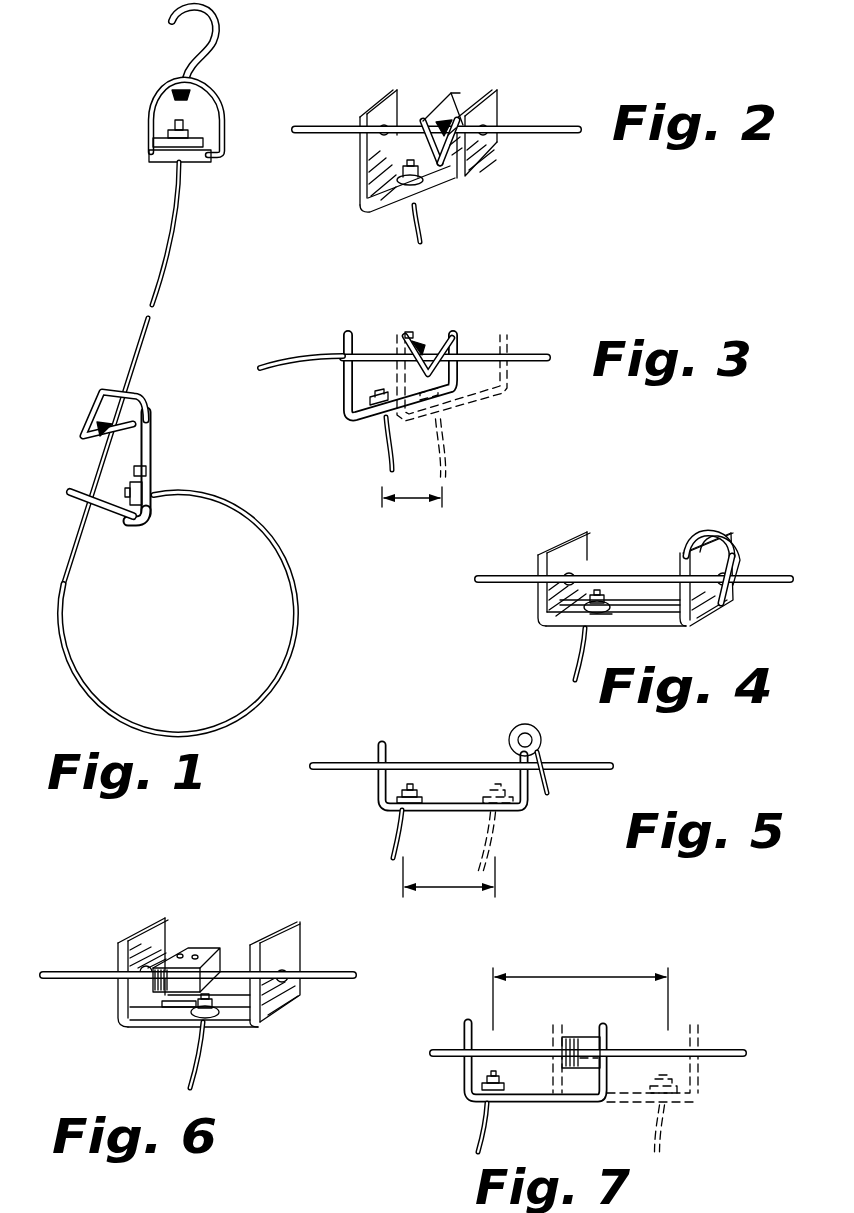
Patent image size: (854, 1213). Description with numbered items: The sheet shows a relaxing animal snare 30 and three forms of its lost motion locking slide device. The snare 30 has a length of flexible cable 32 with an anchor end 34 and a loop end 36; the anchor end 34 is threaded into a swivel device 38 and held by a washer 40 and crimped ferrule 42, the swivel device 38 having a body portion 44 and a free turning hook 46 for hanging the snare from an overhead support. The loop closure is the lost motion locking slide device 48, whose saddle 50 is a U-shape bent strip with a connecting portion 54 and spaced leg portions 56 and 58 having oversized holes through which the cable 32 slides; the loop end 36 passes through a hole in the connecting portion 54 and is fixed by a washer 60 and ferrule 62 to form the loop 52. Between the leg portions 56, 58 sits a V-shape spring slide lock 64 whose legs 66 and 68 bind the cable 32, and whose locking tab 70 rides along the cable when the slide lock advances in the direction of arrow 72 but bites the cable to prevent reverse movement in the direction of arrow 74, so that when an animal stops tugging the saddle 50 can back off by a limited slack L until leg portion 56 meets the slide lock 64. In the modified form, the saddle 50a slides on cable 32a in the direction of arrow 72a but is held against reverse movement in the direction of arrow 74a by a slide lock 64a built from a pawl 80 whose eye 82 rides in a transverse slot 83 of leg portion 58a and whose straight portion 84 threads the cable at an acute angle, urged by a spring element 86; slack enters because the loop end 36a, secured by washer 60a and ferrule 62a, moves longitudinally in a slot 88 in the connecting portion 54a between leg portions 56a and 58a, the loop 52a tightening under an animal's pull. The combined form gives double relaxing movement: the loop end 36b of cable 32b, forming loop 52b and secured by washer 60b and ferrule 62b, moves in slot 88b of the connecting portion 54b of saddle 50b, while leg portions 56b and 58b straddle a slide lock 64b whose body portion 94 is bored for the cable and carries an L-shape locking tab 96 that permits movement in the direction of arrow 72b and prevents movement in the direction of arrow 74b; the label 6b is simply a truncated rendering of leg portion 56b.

In FIG. 1, the relaxing snare 30 is at (86, 303).
In FIG. 1, the flexible cable 32 is at (166, 245).
In FIG. 2, the flexible cable 32 is at (315, 124).
In FIG. 3, the flexible cable 32 is at (532, 365).
In FIG. 1, the anchor end 34 is at (175, 123).
In FIG. 1, the loop end 36 is at (124, 498).
In FIG. 2, the loop end 36 is at (427, 165).
In FIG. 3, the loop end 36 is at (367, 396).
In FIG. 1, the swivel device 38 is at (151, 81).
In FIG. 1, the washer 40 is at (160, 142).
In FIG. 1, the crimped sleeve or ferrule 42 is at (170, 131).
In FIG. 1, the body portion 44 is at (157, 163).
In FIG. 1, the free turning hook 46 is at (219, 26).
In FIG. 1, the lost motion locking slide device 48 is at (75, 511).
In FIG. 1, the slide or saddle 50 is at (128, 464).
In FIG. 2, the slide or saddle 50 is at (427, 148).
In FIG. 3, the slide or saddle 50 is at (396, 395).
In FIG. 1, the loop 52 is at (300, 648).
In FIG. 2, the loop 52 is at (410, 228).
In FIG. 3, the loop 52 is at (262, 348).
In FIG. 1, the connecting portion 54 is at (152, 450).
In FIG. 2, the connecting portion 54 is at (375, 189).
In FIG. 3, the connecting portion 54 is at (376, 426).
In FIG. 1, the leg portion 56 is at (68, 492).
In FIG. 2, the leg portion 56 is at (368, 107).
In FIG. 3, the leg portion 56 is at (343, 341).
In FIG. 1, the leg portion 58 is at (143, 410).
In FIG. 2, the leg portion 58 is at (508, 131).
In FIG. 3, the leg portion 58 is at (460, 343).
In FIG. 1, the washer 60 is at (147, 470).
In FIG. 1, the crimped sleeve or ferrule 62 is at (135, 517).
In FIG. 1, the slide lock 64 is at (96, 400).
In FIG. 2, the slide lock 64 is at (466, 136).
In FIG. 3, the slide lock 64 is at (423, 324).
In FIG. 2, the leg 66 is at (430, 116).
In FIG. 3, the leg 66 is at (403, 347).
In FIG. 2, the leg 68 is at (481, 87).
In FIG. 3, the leg 68 is at (448, 337).
In FIG. 2, the locking detent or tab 70 is at (447, 117).
In FIG. 3, the locking detent or tab 70 is at (413, 334).
In FIG. 2, the arrow 72 is at (375, 42).
In FIG. 3, the arrow 72 is at (350, 288).
In FIG. 2, the arrow 74 is at (553, 42).
In FIG. 3, the arrow 74 is at (473, 292).
In FIG. 3, the slack or looseness L is at (413, 500).
In FIG. 5, the slack or looseness L is at (447, 888).
In FIG. 7, the slack or looseness L is at (575, 972).
In FIG. 4, the cable 32a is at (512, 568).
In FIG. 5, the cable 32a is at (610, 767).
In FIG. 4, the loop end 36a is at (597, 588).
In FIG. 5, the loop end 36a is at (395, 790).
In FIG. 4, the modified slide or saddle 50a is at (605, 595).
In FIG. 5, the modified slide or saddle 50a is at (496, 811).
In FIG. 4, the loop 52a is at (575, 661).
In FIG. 5, the loop 52a is at (351, 755).
In FIG. 4, the connecting portion 54a is at (557, 628).
In FIG. 5, the connecting portion 54a is at (447, 812).
In FIG. 4, the leg portion 56a is at (553, 548).
In FIG. 4, the leg portion 58a is at (680, 571).
In FIG. 5, the leg portion 58a is at (532, 798).
In FIG. 4, the washer 60a is at (598, 617).
In FIG. 4, the crimped sleeve or ferrule 62a is at (616, 608).
In FIG. 4, the slide lock 64a is at (717, 531).
In FIG. 5, the slide lock 64a is at (532, 755).
In FIG. 4, the arrow 72a is at (557, 498).
In FIG. 4, the arrow 74a is at (585, 498).
In FIG. 4, the pawl 80 is at (722, 526).
In FIG. 5, the pawl 80 is at (550, 758).
In FIG. 4, the loop or eye 82 is at (688, 546).
In FIG. 5, the loop or eye 82 is at (512, 752).
In FIG. 4, the transverse slot 83 is at (698, 608).
In FIG. 4, the relatively straight portion 84 is at (737, 567).
In FIG. 5, the relatively straight portion 84 is at (547, 800).
In FIG. 4, the spring element 86 is at (700, 533).
In FIG. 5, the spring element 86 is at (510, 735).
In FIG. 4, the longitudinally extending slot 88 is at (665, 612).
In FIG. 6, the cable 32b is at (330, 973).
In FIG. 6, the cable loop end 36b is at (213, 992).
In FIG. 6, the saddle 50b is at (194, 985).
In FIG. 7, the saddle 50b is at (547, 1065).
In FIG. 6, the loop 52b is at (210, 1072).
In FIG. 7, the loop 52b is at (571, 1128).
In FIG. 6, the connecting portion 54b is at (133, 1030).
In FIG. 7, the connecting portion 54b is at (540, 1103).
In FIG. 6, the leg portion 56b is at (117, 958).
In FIG. 7, the leg portion 56b is at (490, 1071).
In FIG. 7, the first side wall (truncated numeral) 6b is at (452, 1023).
In FIG. 6, the leg portion 58b is at (305, 940).
In FIG. 7, the leg portion 58b is at (608, 1037).
In FIG. 6, the washer 60b is at (187, 1025).
In FIG. 6, the crimped sleeve or ferrule 62b is at (163, 1030).
In FIG. 6, the slide lock 64b is at (201, 925).
In FIG. 7, the slide lock 64b is at (580, 1034).
In FIG. 6, the arrow 72b is at (110, 893).
In FIG. 6, the arrow 74b is at (323, 895).
In FIG. 6, the longitudinally extending slot 88b is at (257, 1027).
In FIG. 6, the body portion 94 is at (172, 947).
In FIG. 6, the L-shape locking detent or tab 96 is at (200, 947).